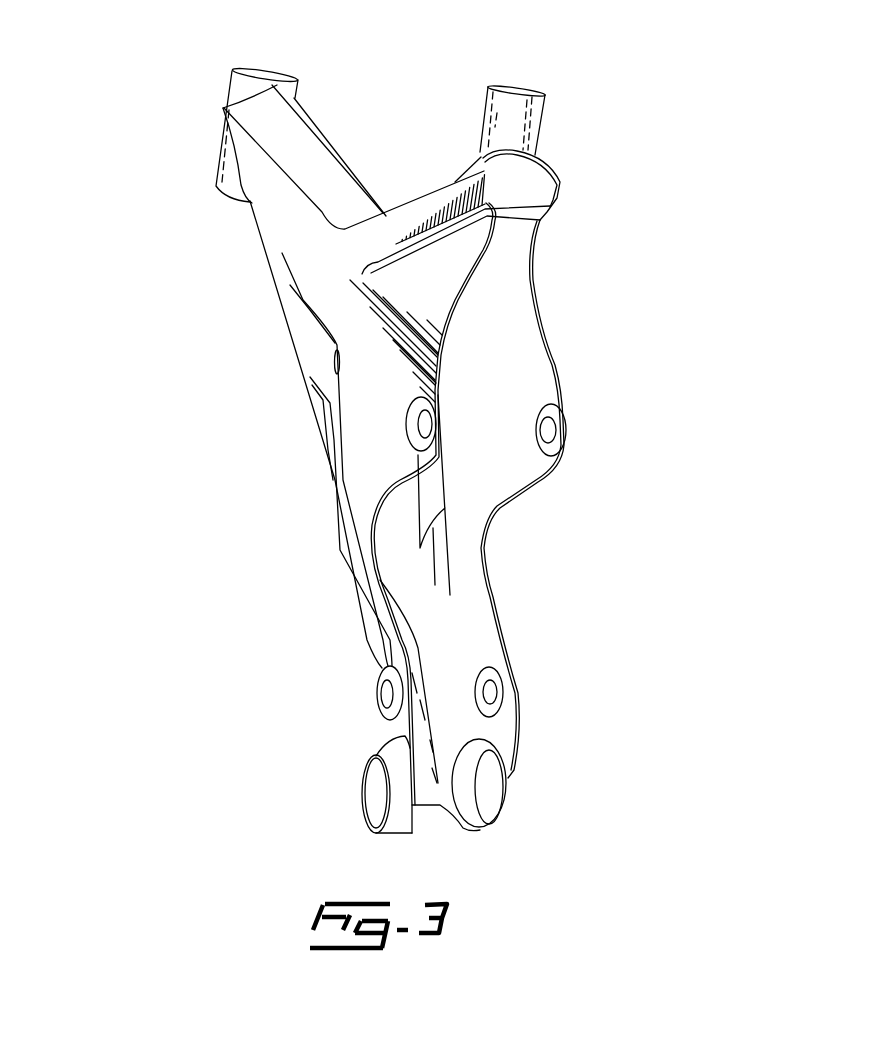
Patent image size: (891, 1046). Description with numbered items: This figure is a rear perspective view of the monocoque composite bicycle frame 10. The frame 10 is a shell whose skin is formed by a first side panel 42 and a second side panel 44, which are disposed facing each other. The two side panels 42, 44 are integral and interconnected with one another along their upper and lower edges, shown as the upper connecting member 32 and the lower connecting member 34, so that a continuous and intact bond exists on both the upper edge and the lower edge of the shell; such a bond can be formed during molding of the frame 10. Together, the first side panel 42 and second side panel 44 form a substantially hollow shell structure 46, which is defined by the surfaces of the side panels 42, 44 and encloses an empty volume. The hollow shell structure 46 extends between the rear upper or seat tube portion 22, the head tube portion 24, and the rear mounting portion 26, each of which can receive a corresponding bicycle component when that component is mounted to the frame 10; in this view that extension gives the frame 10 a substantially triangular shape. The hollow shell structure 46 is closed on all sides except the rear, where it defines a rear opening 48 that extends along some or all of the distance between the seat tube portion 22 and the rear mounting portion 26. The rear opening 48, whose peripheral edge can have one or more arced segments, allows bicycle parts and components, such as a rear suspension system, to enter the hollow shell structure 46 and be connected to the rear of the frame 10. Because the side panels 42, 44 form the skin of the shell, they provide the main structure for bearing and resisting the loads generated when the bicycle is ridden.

The frame 10 is at (646, 241).
The rear upper portion 22 is at (545, 131).
The head tube portion 24 is at (237, 93).
The rear mounting portion 26 is at (388, 727).
The upper connecting member 32 is at (337, 192).
The lower connecting member 34 is at (337, 472).
The first side panel 42 is at (510, 360).
The second side panel 44 is at (307, 325).
The hollow shell structure 46 is at (400, 458).
The rear opening 48 is at (455, 502).